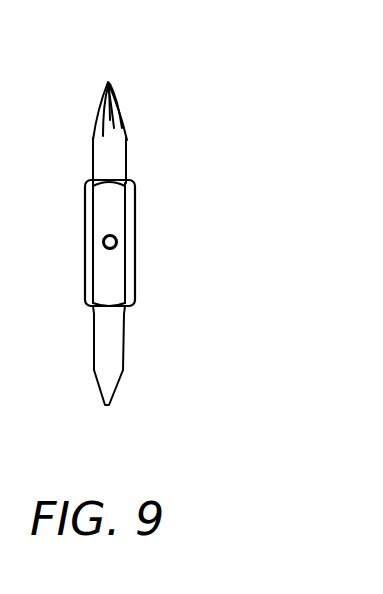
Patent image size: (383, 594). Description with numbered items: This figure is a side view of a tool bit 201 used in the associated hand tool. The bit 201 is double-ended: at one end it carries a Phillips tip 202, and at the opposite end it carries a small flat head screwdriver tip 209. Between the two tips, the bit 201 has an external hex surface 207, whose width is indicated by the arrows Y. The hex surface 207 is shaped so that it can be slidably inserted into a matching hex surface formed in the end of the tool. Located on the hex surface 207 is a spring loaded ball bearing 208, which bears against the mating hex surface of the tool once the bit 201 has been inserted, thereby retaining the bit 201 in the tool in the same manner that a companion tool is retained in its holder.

The bit 201 is at (221, 159).
The Phillips tip 202 is at (123, 106).
The external hex surface 207 is at (137, 191).
The spring loaded ball bearing 208 is at (97, 236).
The small flat head screwdriver tip 209 is at (121, 372).
The arrows Y is at (22, 268).